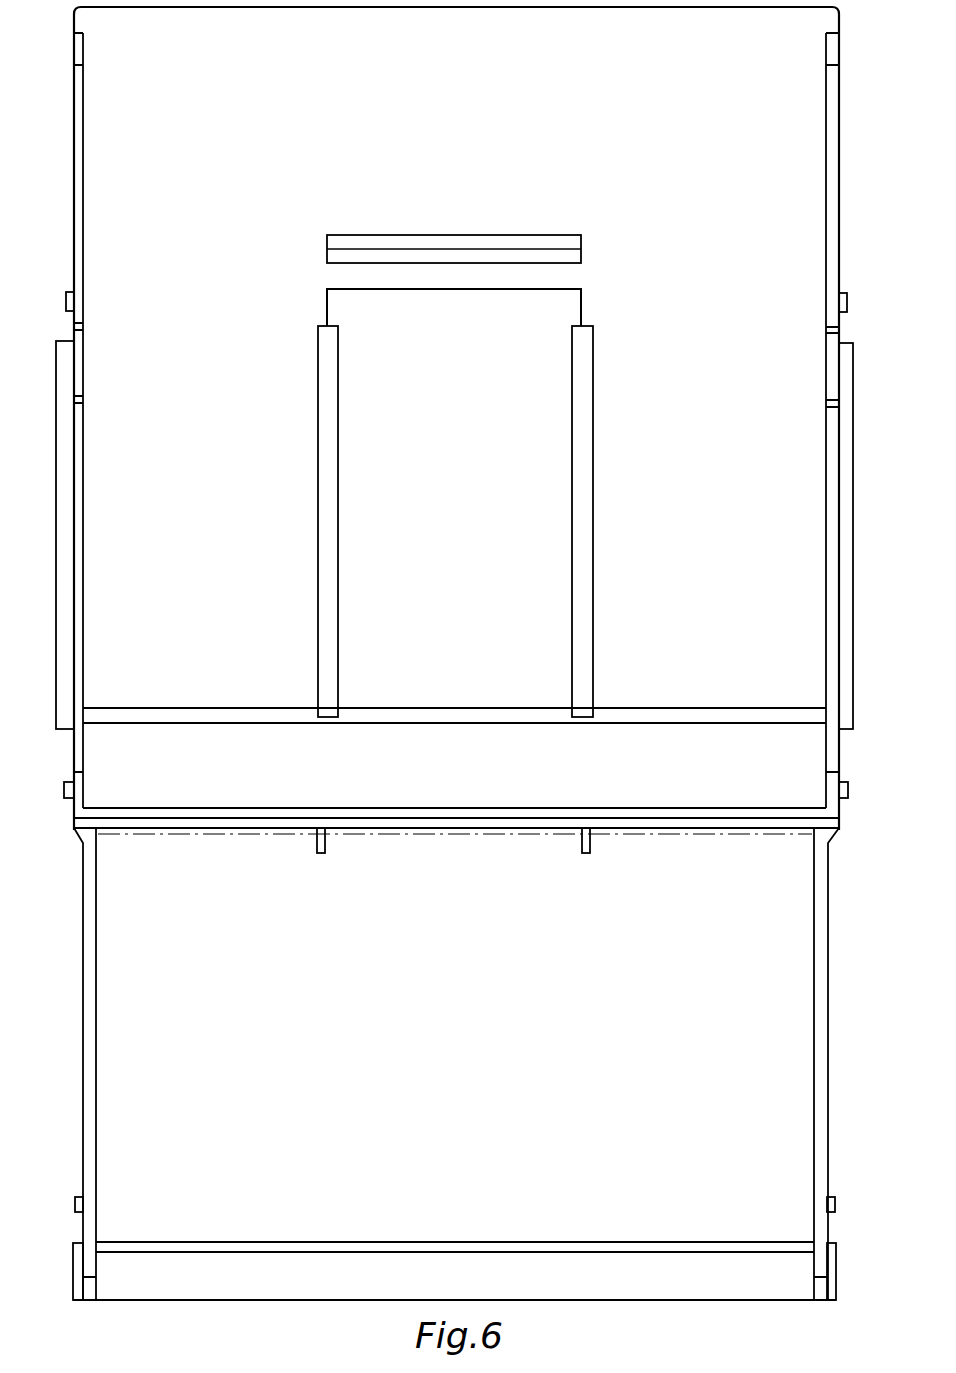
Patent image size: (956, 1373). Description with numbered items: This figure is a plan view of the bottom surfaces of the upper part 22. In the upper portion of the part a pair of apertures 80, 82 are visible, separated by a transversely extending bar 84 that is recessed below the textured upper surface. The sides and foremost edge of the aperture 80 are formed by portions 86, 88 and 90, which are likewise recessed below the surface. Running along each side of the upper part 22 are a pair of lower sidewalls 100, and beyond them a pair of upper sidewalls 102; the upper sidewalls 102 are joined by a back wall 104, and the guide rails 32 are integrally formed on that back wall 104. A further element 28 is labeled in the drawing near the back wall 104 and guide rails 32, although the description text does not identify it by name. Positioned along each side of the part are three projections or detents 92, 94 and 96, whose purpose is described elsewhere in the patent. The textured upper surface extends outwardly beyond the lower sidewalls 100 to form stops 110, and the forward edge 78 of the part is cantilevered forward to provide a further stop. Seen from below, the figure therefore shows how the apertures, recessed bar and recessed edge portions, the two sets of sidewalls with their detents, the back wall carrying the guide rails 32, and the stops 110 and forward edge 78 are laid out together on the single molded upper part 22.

The upper part 22 is at (841, 237).
The lower sidewalls 100 is at (72, 213).
The projection or detent 96 is at (66, 301).
The stops 110 is at (54, 588).
The aperture 82 is at (466, 236).
The transversely extending bar 84 is at (450, 272).
The recessed portion 86 is at (570, 510).
The recessed portion 88 is at (340, 506).
The aperture 80 is at (455, 494).
The recessed portion 90 is at (484, 770).
The projection or detent 94 is at (849, 792).
The plate 28 is at (286, 818).
The upper sidewalls 102 is at (828, 1013).
The back wall 104 is at (185, 838).
The guide rails 32 is at (326, 840).
The projection or detent 92 is at (836, 1206).
The forward edge 78 is at (625, 1286).